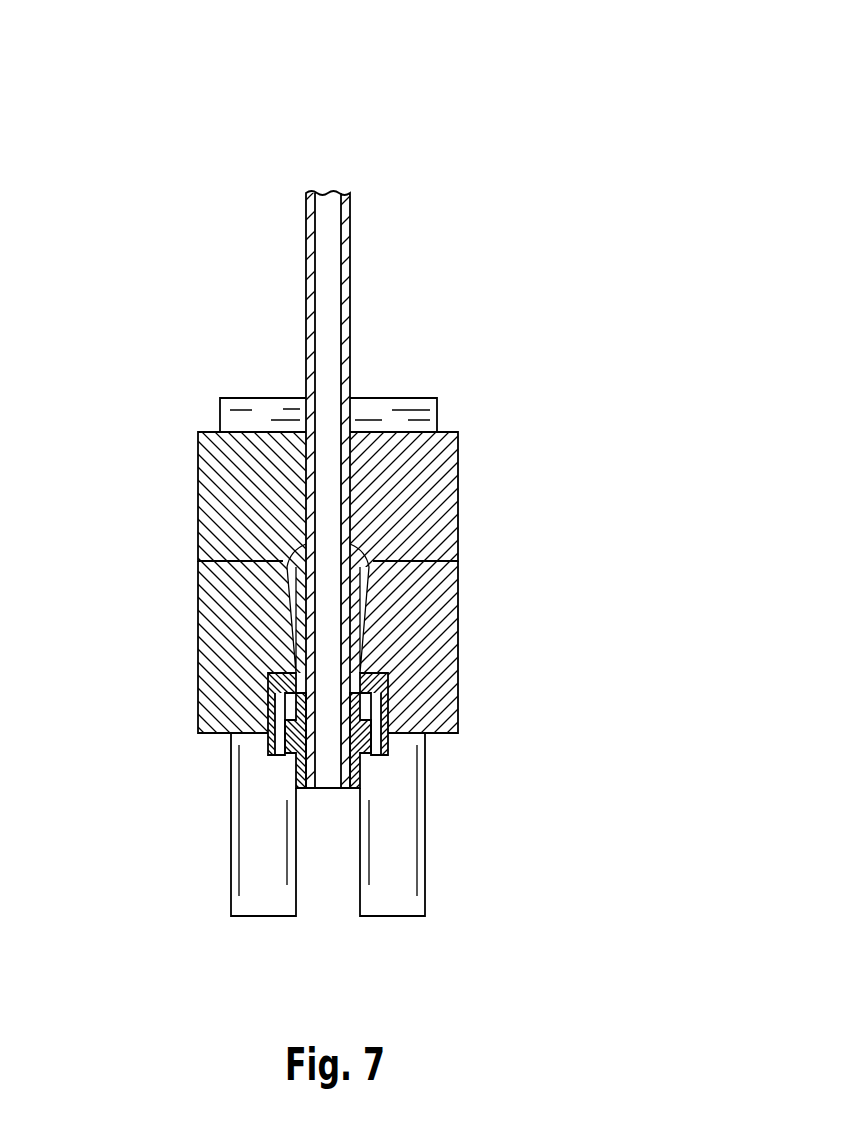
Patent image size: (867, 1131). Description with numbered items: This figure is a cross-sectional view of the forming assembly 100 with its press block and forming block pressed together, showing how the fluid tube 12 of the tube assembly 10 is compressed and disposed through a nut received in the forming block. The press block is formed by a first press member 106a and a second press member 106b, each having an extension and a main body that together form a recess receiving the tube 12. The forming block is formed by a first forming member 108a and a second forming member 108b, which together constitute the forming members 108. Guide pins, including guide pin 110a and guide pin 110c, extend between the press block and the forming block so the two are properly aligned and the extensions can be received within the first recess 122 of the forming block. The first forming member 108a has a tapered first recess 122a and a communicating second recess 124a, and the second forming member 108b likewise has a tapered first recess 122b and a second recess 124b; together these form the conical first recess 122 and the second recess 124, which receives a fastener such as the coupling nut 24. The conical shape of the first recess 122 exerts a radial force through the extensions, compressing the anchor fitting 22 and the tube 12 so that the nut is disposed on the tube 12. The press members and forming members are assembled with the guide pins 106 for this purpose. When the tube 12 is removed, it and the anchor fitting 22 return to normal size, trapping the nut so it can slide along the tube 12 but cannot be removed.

The tube assembly 10 is at (437, 125).
The fluid tube 12 is at (352, 213).
The forming assembly 100 is at (487, 363).
The guide pins 106 is at (463, 446).
The first press member 106a is at (458, 507).
The second press member 106b is at (198, 465).
The forming member 108 is at (540, 642).
The first forming member 108a is at (458, 613).
The second forming member 108b is at (198, 650).
The guide pin 110a is at (392, 398).
The guide pin 110c is at (263, 398).
The first recess 122 is at (288, 631).
The first recess 122a is at (368, 579).
The first recess 122b is at (288, 583).
The second recess 124 is at (268, 693).
The second recess 124a is at (388, 727).
The second recess 124b is at (268, 731).
The anchor fitting 22 is at (372, 740).
The coupling nut 24 is at (272, 748).